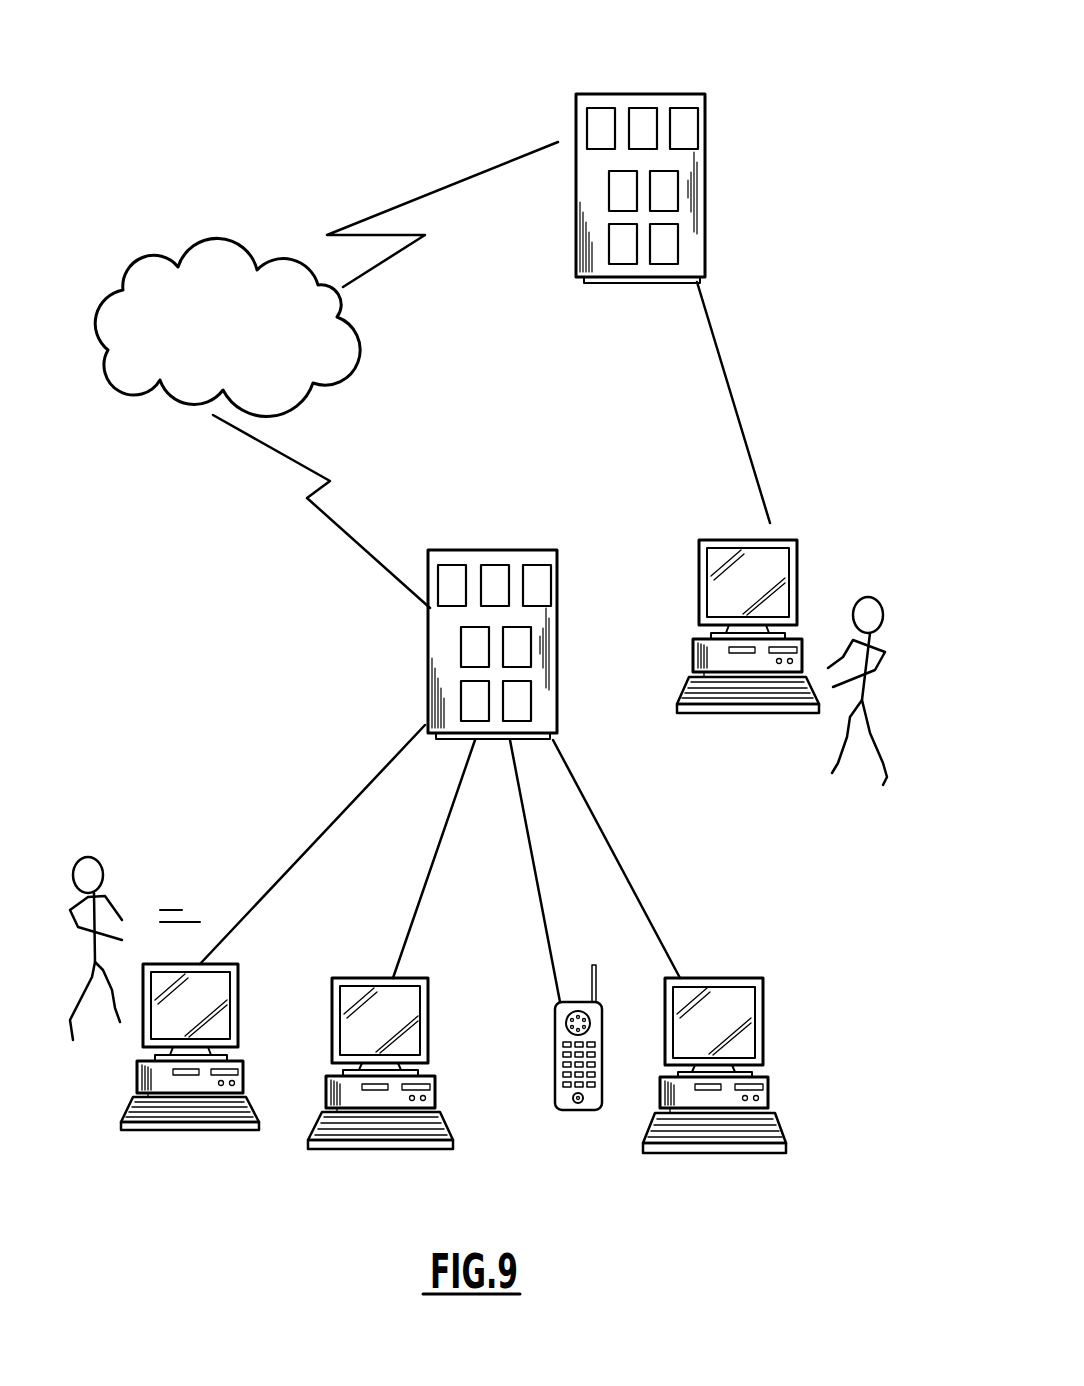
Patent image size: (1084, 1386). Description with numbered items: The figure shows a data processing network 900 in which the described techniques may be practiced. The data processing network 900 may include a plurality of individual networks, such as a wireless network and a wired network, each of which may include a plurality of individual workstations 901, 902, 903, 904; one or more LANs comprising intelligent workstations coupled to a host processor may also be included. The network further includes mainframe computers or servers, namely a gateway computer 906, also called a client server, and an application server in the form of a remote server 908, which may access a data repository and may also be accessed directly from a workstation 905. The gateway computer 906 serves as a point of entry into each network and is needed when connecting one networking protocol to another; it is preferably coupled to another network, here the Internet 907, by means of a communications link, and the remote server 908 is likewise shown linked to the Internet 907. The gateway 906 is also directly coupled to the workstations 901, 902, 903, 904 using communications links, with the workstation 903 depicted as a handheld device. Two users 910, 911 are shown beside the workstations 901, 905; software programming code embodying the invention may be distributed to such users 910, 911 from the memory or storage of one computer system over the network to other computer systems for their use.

The data processing network 900 is at (153, 671).
The workstation 901 is at (158, 1170).
The workstation 902 is at (363, 978).
The workstation 903 is at (555, 1047).
The workstation 904 is at (727, 978).
The workstation 905 is at (728, 540).
The gateway computer 906 is at (530, 550).
The Internet 907 is at (215, 236).
The remote server 908 is at (705, 123).
The user 910 is at (113, 872).
The user 911 is at (880, 662).